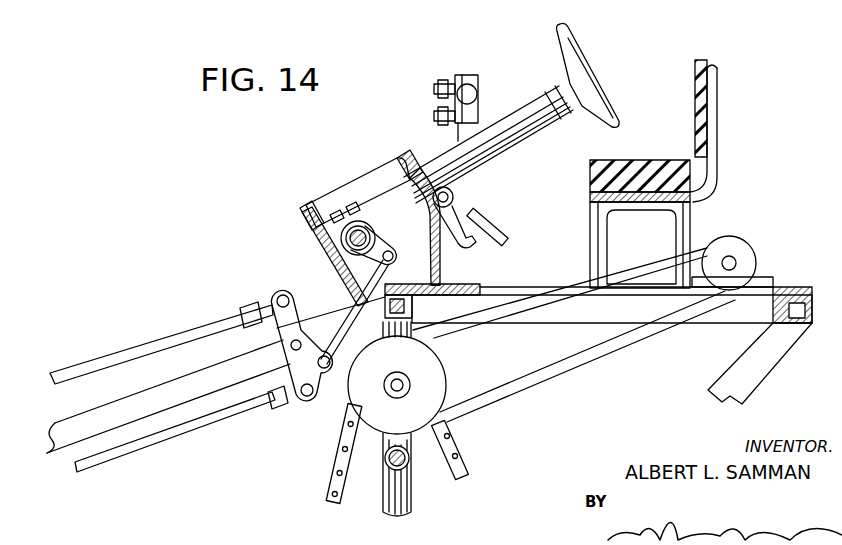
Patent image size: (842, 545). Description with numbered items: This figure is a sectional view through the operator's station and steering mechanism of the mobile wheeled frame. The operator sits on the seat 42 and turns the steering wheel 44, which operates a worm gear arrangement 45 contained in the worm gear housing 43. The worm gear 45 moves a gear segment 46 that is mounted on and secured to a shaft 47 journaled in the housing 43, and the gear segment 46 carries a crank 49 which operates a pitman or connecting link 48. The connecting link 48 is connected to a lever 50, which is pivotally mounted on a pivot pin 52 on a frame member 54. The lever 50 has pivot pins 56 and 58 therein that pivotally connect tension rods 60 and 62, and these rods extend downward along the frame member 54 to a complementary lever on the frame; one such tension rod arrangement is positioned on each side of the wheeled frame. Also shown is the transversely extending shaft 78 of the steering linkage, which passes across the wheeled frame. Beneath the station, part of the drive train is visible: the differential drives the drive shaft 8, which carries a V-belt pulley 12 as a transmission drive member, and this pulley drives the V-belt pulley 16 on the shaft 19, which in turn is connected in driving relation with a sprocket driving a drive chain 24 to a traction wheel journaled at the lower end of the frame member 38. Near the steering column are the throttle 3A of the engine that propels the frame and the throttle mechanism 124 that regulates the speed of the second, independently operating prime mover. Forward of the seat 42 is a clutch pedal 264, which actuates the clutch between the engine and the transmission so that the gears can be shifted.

The steering wheel 44 is at (582, 48).
The throttle 3A is at (435, 85).
The throttle mechanism 124 is at (435, 118).
The seat 42 is at (633, 167).
The worm gear arrangement 45 is at (340, 212).
The worm gear housing 43 is at (313, 204).
The gear segment 46 is at (371, 223).
The shaft 47 is at (380, 234).
The clutch pedal 264 is at (482, 217).
The crank 49 is at (432, 260).
The shaft 78 is at (394, 297).
The pitman or connecting link 48 is at (337, 313).
The pivot pin 56 is at (282, 293).
The lever 50 is at (338, 385).
The tension rod 60 is at (163, 340).
The pivot pin 52 is at (272, 335).
The frame member 54 is at (178, 382).
The tension rod 62 is at (175, 432).
The pivot pin 58 is at (307, 403).
The V-belt pulley 16 is at (423, 358).
The shaft 19 is at (410, 385).
The frame member 38 is at (413, 493).
The drive chain 24 is at (340, 456).
The V-belt pulley 12 is at (745, 242).
The drive shaft 8 is at (734, 265).